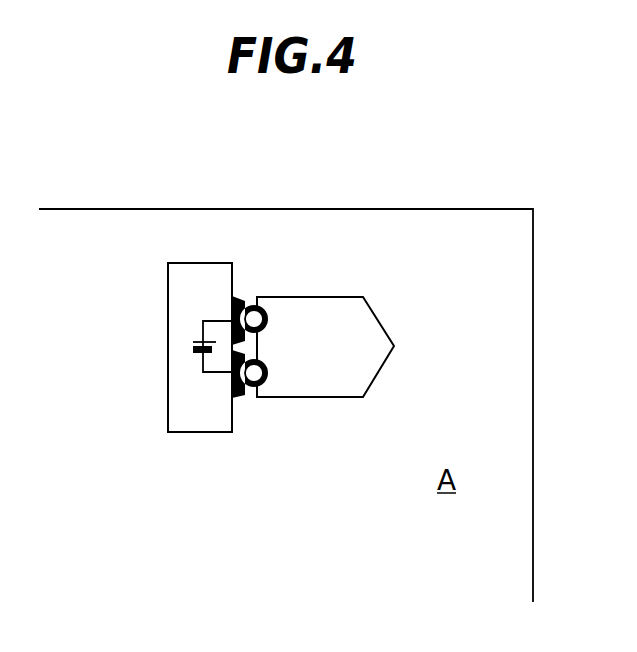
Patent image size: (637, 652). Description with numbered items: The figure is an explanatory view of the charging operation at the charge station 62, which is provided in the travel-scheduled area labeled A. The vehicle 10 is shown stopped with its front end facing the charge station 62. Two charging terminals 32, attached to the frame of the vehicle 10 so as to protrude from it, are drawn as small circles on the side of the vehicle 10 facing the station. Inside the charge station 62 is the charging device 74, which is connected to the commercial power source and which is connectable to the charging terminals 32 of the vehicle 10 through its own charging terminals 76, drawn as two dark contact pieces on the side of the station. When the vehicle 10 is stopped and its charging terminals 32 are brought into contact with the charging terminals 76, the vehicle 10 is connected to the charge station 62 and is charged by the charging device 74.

The vehicle 10 is at (375, 312).
The charging terminals 32 is at (263, 318).
The charge station 62 is at (188, 262).
The charging device 74 is at (188, 344).
The charging terminals 76 is at (242, 297).